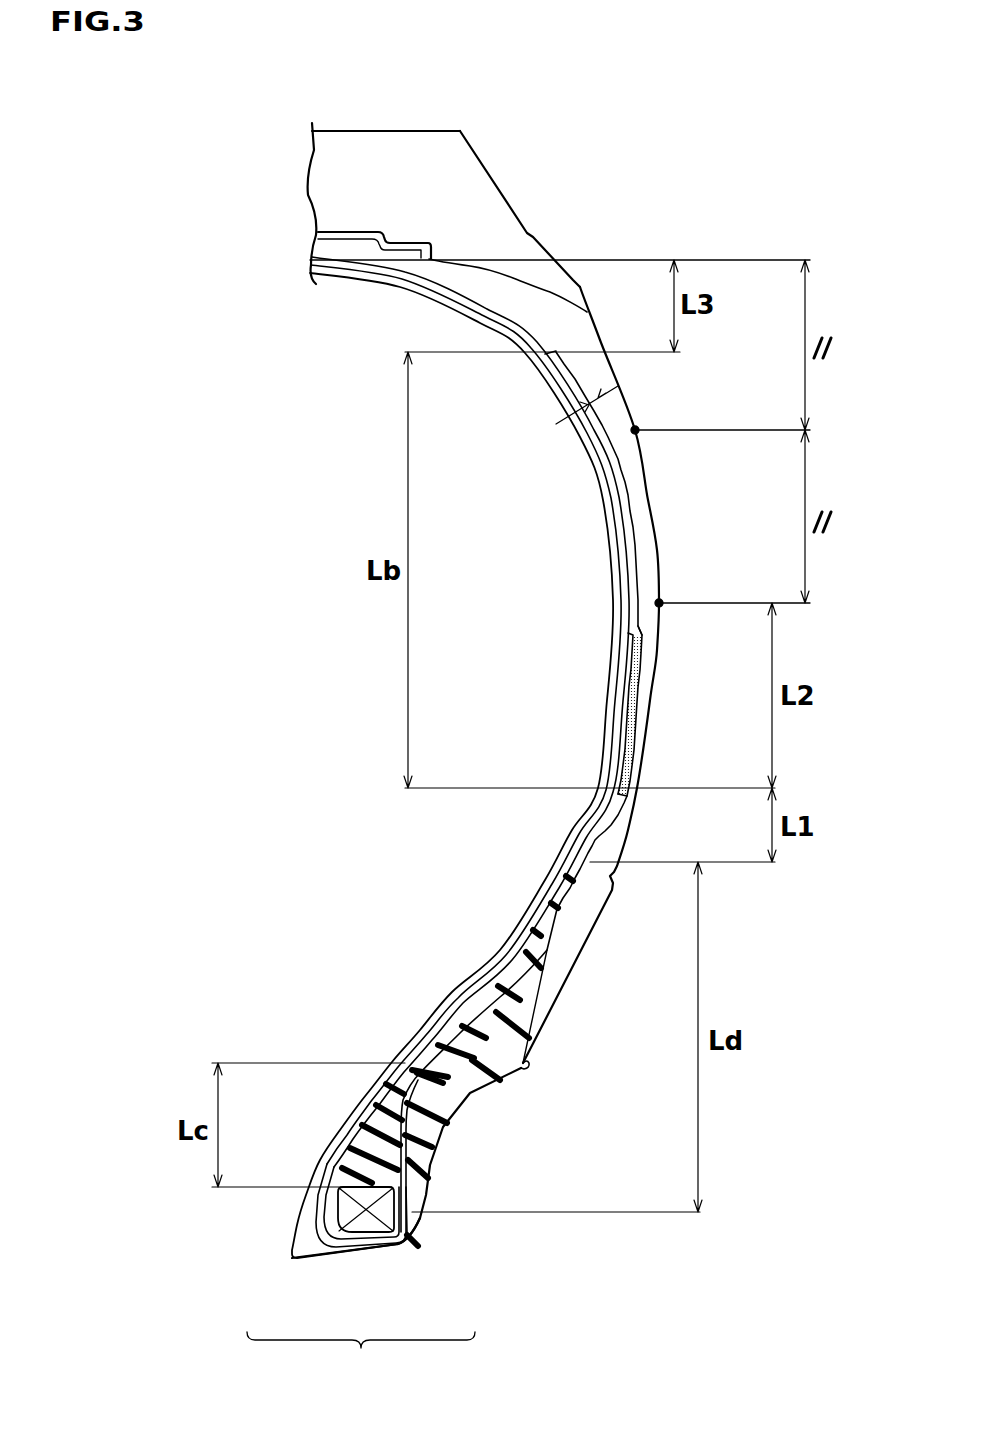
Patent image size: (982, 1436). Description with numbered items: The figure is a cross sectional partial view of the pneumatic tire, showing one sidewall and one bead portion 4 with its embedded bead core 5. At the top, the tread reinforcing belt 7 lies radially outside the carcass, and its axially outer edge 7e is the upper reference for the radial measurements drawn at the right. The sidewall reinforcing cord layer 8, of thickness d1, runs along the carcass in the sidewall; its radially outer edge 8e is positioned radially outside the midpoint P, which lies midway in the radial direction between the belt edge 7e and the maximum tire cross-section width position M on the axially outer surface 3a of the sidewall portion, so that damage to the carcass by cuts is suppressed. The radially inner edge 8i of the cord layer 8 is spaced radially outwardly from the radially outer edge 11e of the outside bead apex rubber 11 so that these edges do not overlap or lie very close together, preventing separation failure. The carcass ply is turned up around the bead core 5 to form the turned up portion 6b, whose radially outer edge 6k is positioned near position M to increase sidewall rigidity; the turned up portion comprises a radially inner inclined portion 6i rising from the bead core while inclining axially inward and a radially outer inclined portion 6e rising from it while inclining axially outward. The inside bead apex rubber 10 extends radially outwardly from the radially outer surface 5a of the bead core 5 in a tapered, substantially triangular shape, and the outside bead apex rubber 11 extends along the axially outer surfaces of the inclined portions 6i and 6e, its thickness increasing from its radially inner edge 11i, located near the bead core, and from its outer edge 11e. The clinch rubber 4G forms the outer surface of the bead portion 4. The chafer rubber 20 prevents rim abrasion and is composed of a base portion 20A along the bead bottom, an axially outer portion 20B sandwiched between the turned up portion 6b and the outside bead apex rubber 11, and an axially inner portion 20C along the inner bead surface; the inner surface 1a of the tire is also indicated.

The axially outer edge of the belt 7e is at (438, 252).
The tread reinforcing belt 7 is at (345, 262).
The radially outer edge of the sidewall reinforcing cord layer 8e is at (540, 362).
The midpoint P is at (636, 428).
The thickness of the sidewall reinforcing cord layer d1 is at (593, 420).
The axially outer surface of the sidewall portion 3a is at (645, 490).
The maximum tire cross-section width position M is at (660, 601).
The radially outer edge of the turned up portion 6k is at (634, 640).
The sidewall reinforcing cord layer 8 is at (641, 693).
The turned up portion 6b is at (624, 717).
The radially inner edge of the sidewall reinforcing cord layer 8i is at (624, 799).
The radially outer edge of the outside bead apex rubber 11e is at (588, 860).
The outside bead apex rubber 11 is at (483, 1012).
The tire inner surface 1a is at (432, 1040).
The inside bead apex rubber 10 is at (392, 1108).
The clinch rubber 4G is at (525, 1003).
The radially outer inclined portion 6e is at (508, 1070).
The radially inner inclined portion 6i is at (404, 1137).
The bead portion 4 is at (542, 1126).
The radially inner edge of the outside bead apex rubber 11i is at (408, 1212).
The radially outer surface of the bead core 5a is at (356, 1185).
The bead core 5 is at (336, 1210).
The axially inner portion 20C is at (300, 1256).
The base portion 20A is at (355, 1258).
The axially outer portion 20B is at (420, 1236).
The chafer rubber 20 is at (361, 1355).